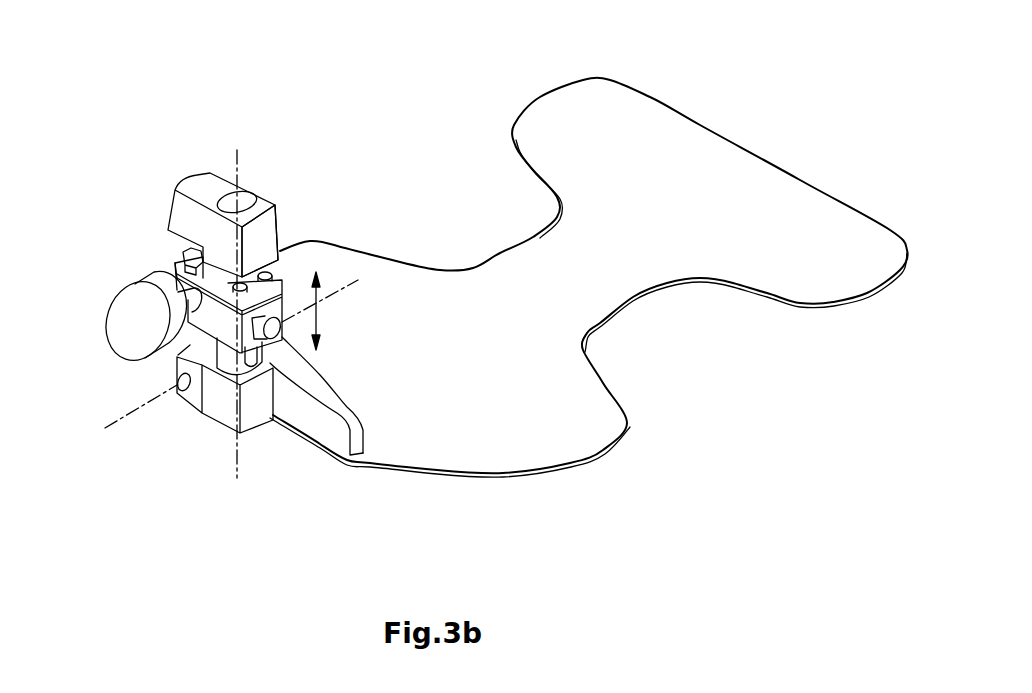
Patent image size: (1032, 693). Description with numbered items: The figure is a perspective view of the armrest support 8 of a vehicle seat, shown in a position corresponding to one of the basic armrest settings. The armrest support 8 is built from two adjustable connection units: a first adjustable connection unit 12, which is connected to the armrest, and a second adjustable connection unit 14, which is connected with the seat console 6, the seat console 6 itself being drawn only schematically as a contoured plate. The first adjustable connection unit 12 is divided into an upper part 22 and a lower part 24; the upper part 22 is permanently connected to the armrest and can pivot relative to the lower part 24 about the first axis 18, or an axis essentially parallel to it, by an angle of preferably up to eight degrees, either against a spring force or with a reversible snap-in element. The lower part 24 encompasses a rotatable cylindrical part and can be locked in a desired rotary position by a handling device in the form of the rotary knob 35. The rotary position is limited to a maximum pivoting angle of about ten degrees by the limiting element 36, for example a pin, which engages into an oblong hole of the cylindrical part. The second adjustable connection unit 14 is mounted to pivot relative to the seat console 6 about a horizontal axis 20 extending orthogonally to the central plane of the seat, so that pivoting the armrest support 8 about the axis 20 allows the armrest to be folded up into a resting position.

The seat console 6 is at (668, 173).
The armrest support 8 is at (148, 245).
The first adjustable connection unit 12 is at (165, 168).
The second adjustable connection unit 14 is at (220, 410).
The first axis 18 is at (265, 160).
The horizontal axis 20 is at (138, 414).
The upper part 22 is at (263, 233).
The lower part 24 is at (283, 300).
The rotary knob 35 is at (118, 352).
The limiting element 36 is at (282, 340).